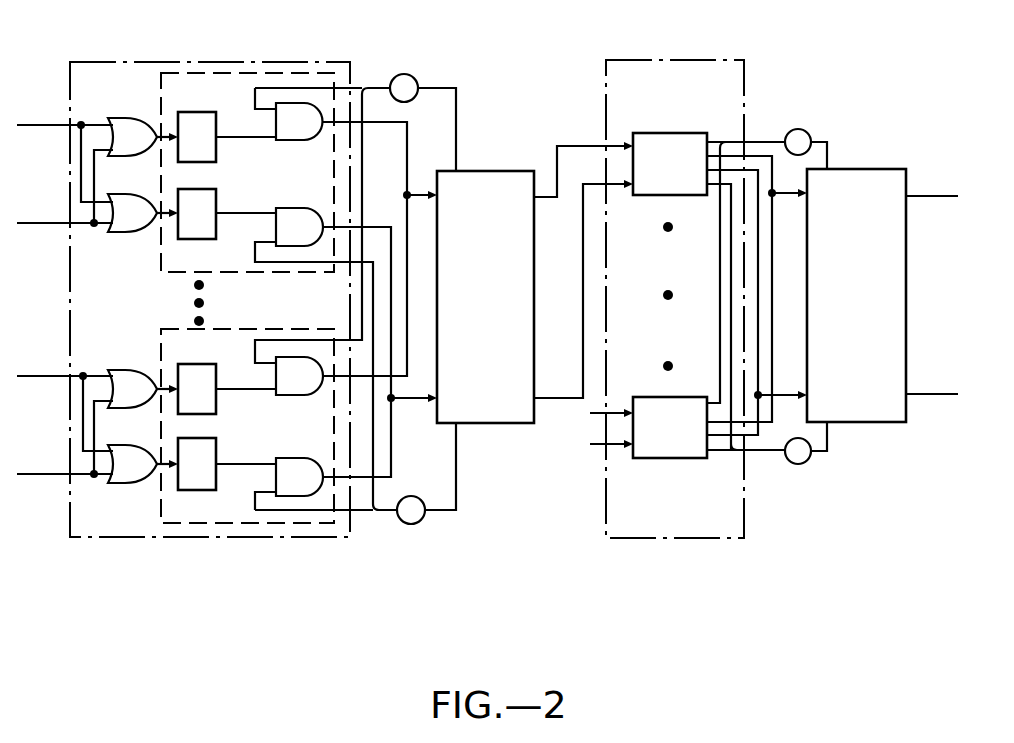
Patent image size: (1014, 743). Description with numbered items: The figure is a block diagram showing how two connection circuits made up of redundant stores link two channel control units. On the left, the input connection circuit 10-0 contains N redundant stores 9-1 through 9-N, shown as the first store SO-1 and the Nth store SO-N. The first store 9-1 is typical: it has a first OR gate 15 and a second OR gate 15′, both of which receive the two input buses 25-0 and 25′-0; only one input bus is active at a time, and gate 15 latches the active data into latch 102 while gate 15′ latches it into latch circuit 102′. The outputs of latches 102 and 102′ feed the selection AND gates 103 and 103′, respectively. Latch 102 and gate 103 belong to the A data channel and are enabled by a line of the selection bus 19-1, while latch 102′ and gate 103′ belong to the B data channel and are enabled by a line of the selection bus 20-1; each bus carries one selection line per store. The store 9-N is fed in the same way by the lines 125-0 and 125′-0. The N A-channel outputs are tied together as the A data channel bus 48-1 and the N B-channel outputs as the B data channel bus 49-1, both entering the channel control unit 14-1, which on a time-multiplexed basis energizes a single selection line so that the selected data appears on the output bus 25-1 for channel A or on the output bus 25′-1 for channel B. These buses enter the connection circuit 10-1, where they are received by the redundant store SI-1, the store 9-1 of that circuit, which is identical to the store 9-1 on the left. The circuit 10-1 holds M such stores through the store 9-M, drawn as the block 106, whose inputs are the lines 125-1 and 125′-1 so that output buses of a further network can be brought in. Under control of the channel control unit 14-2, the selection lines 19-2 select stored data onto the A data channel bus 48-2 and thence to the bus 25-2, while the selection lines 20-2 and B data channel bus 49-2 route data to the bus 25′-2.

The input connection circuit 10-0 is at (252, 62).
The connection circuit 10-1 is at (700, 60).
The input bus 25-0 is at (42, 124).
The input bus 25′-0 is at (42, 222).
The input line 125-0 is at (45, 375).
The input line 125′-0 is at (45, 473).
The first OR gate 15 is at (121, 124).
The second OR gate 15′ is at (123, 199).
The latch 102 is at (190, 115).
The latch circuit 102′ is at (193, 196).
The selection AND gate 103 is at (296, 141).
The selection AND gate 103′ is at (294, 216).
The first store SO-1 is at (266, 177).
The Nth store SO-N is at (254, 433).
The redundant store SI-1 is at (669, 165).
The redundant store 9-1 is at (260, 272).
The redundant store 9-N is at (262, 328).
The redundant store 9-M is at (674, 432).
The sub-unit block 106 is at (670, 459).
The selection bus 19-1 is at (457, 104).
The selection bus 20-1 is at (457, 490).
The A data channel bus 48-1 is at (422, 195).
The B data channel bus 49-1 is at (412, 400).
The channel control unit 14-1 is at (474, 172).
The channel control unit 14-2 is at (845, 176).
The output bus 25-1 is at (590, 145).
The output bus 25′-1 is at (584, 212).
The line 125-1 is at (597, 414).
The line 125′-1 is at (597, 446).
The selection lines 19-2 is at (827, 152).
The selection lines 20-2 is at (828, 455).
The A data channel bus 48-2 is at (784, 191).
The B data channel bus 49-2 is at (787, 398).
The bus 25-2 is at (934, 196).
The bus 25′-2 is at (927, 394).